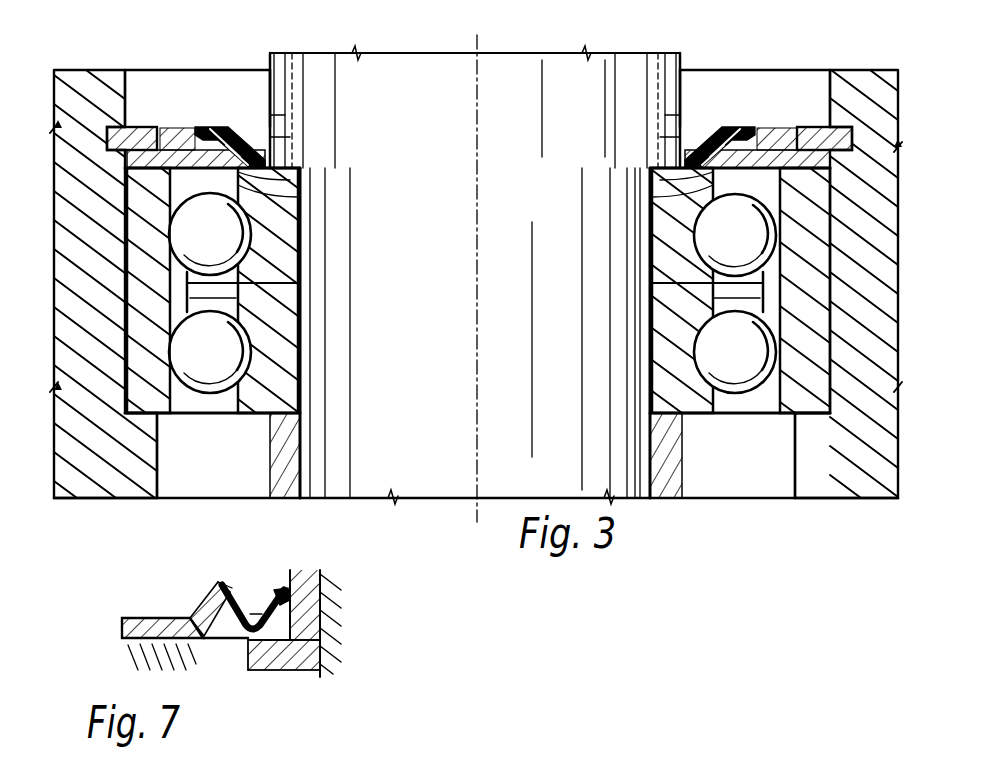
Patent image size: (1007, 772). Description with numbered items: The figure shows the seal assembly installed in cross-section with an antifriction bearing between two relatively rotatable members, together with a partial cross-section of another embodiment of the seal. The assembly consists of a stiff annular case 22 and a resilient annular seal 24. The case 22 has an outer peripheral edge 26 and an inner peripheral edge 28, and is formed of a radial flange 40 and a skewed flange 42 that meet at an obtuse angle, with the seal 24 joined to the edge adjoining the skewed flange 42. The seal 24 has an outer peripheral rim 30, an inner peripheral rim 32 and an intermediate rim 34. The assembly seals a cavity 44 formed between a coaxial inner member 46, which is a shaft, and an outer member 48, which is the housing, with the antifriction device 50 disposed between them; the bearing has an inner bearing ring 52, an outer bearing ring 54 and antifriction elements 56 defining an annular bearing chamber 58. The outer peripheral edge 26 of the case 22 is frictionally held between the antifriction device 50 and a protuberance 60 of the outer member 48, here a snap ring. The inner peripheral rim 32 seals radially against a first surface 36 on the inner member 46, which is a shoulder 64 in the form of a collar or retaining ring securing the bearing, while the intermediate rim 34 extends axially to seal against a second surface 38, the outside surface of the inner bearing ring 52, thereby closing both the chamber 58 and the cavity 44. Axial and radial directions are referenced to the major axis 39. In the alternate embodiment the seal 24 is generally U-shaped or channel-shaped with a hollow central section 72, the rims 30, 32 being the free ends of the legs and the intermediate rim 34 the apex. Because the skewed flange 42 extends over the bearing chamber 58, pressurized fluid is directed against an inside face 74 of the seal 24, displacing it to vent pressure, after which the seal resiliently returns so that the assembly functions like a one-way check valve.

In FIG. 3, the annular case 22 is at (188, 150).
In FIG. 7, the annular case 22 is at (122, 620).
In FIG. 3, the annular seal 24 is at (272, 120).
In FIG. 7, the annular seal 24 is at (216, 580).
In FIG. 3, the outer peripheral edge 26 is at (122, 163).
In FIG. 3, the inner peripheral edge 28 is at (200, 134).
In FIG. 3, the outer peripheral rim 30 is at (198, 128).
In FIG. 7, the outer peripheral rim 30 is at (217, 586).
In FIG. 3, the inner peripheral rim 32 is at (268, 137).
In FIG. 7, the inner peripheral rim 32 is at (322, 605).
In FIG. 3, the intermediate rim 34 is at (282, 197).
In FIG. 3, the first surface 36 is at (270, 100).
In FIG. 3, the second surface 38 is at (292, 178).
In FIG. 3, the major axis 39 is at (479, 336).
In FIG. 3, the radial flange 40 is at (168, 142).
In FIG. 7, the skewed flange 42 is at (200, 610).
In FIG. 3, the cavity 44 is at (240, 454).
In FIG. 3, the inner member 46 is at (455, 378).
In FIG. 3, the outer member 48 is at (97, 456).
In FIG. 3, the antifriction device 50 is at (292, 240).
In FIG. 3, the inner bearing ring 52 is at (282, 342).
In FIG. 3, the outer bearing ring 54 is at (238, 297).
In FIG. 3, the antifriction elements 56 is at (227, 355).
In FIG. 3, the annular bearing chamber 58 is at (256, 312).
In FIG. 7, the annular bearing chamber 58 is at (226, 670).
In FIG. 3, the protuberance 60 is at (152, 148).
In FIG. 3, the shoulder 64 is at (292, 68).
In FIG. 7, the hollow central section 72 is at (254, 598).
In FIG. 3, the inside face 74 is at (224, 182).
In FIG. 7, the inside face 74 is at (243, 642).